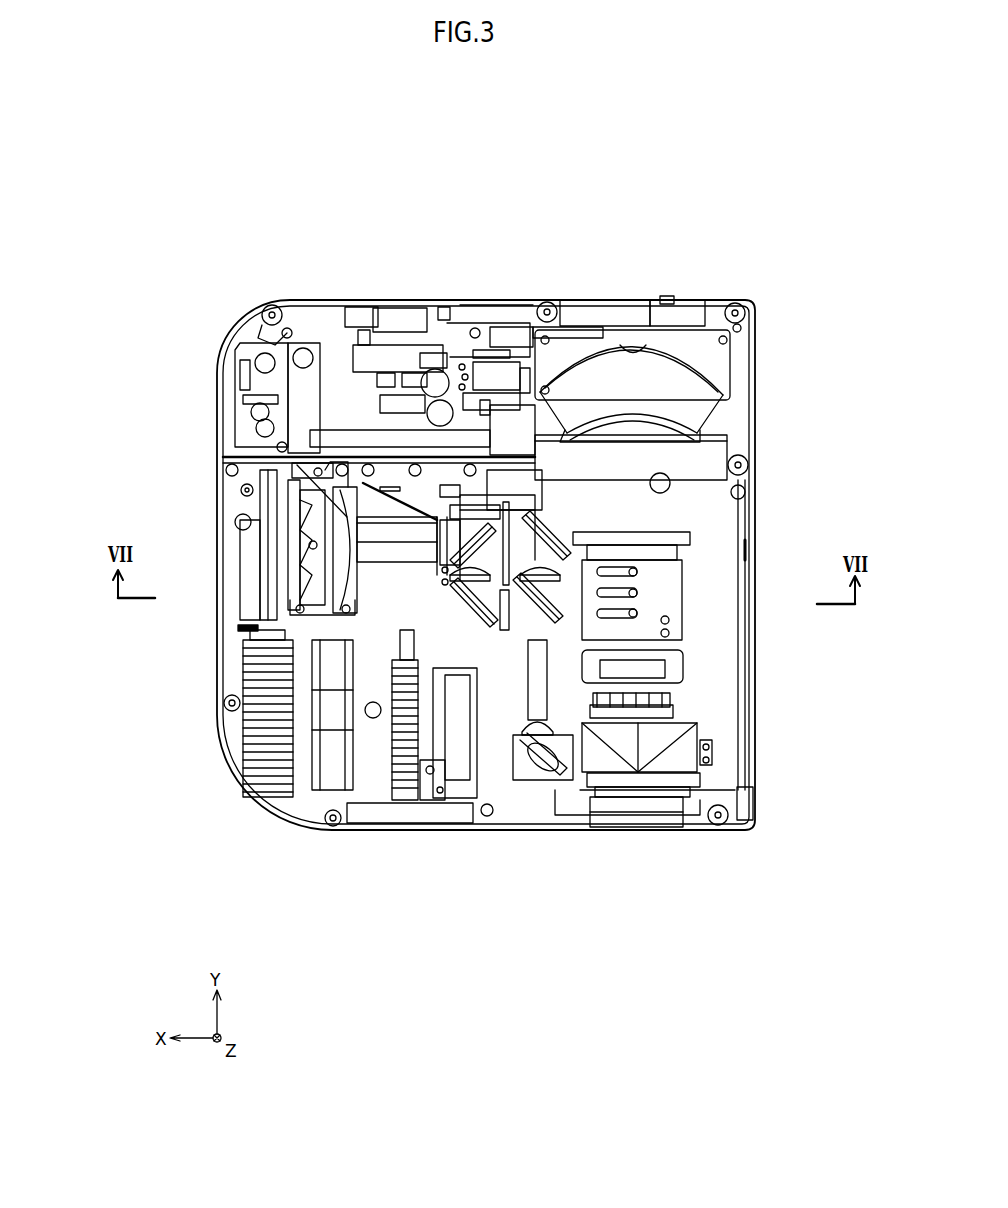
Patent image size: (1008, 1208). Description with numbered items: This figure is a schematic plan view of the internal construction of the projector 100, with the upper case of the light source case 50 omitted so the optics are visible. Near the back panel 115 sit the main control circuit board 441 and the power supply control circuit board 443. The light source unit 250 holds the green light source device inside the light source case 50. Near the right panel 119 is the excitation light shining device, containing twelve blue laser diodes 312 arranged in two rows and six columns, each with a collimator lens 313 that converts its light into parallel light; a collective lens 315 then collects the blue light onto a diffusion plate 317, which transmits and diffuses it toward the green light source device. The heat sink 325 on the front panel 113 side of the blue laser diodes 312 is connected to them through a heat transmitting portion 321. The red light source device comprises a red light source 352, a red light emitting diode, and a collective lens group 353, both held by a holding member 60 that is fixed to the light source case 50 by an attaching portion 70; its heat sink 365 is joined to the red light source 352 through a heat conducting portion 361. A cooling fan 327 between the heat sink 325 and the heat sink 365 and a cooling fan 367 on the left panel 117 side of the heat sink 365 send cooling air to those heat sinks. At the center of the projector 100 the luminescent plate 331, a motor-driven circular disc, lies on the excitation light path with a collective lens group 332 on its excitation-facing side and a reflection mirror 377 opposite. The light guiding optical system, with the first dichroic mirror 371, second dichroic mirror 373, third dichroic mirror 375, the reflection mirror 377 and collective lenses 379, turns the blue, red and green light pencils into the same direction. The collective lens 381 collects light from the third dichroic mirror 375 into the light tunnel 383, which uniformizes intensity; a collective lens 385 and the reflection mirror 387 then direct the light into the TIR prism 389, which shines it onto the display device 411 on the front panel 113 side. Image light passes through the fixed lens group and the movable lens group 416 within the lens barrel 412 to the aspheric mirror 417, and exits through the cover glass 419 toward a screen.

The projector 100 is at (703, 222).
The front panel 113 is at (605, 815).
The back panel 115 is at (607, 300).
The left panel 117 is at (752, 555).
The right panel 119 is at (218, 428).
The light source unit 250 is at (345, 360).
The blue laser diodes 312 is at (232, 470).
The collimator lenses 313 is at (295, 524).
The collective lens 315 is at (247, 428).
The diffusion plate 317 is at (435, 515).
The heat transmitting portion 321 is at (300, 551).
The heat sink 325 is at (295, 648).
The cooling fan 327 is at (330, 650).
The luminescent plate 331 is at (540, 462).
The collective lens group 332 is at (545, 470).
The red light source 352 is at (330, 676).
The collective lens group 353 is at (390, 655).
The heat conducting portion 361 is at (278, 641).
The heat sink 365 is at (445, 640).
The cooling fan 367 is at (483, 635).
The first dichroic mirror 371 is at (500, 470).
The second dichroic mirror 373 is at (465, 630).
The third dichroic mirror 375 is at (640, 668).
The reflection mirror 377 is at (660, 482).
The collective lenses 379 is at (477, 883).
The collective lens 381 is at (660, 730).
The light tunnel 383 is at (640, 775).
The collective lens 385 is at (575, 795).
The reflection mirror 387 is at (540, 775).
The TIR prism 389 is at (645, 800).
The display device 411 is at (705, 808).
The lens barrel 412 is at (660, 592).
The movable lens group 416 is at (648, 608).
The aspheric mirror 417 is at (677, 390).
The cover glass 419 is at (700, 437).
The main control circuit board 441 is at (265, 312).
The power supply control circuit board 443 is at (333, 342).
The light source case 50 is at (500, 605).
The holding member 60 is at (400, 640).
The attaching portion 70 is at (420, 660).